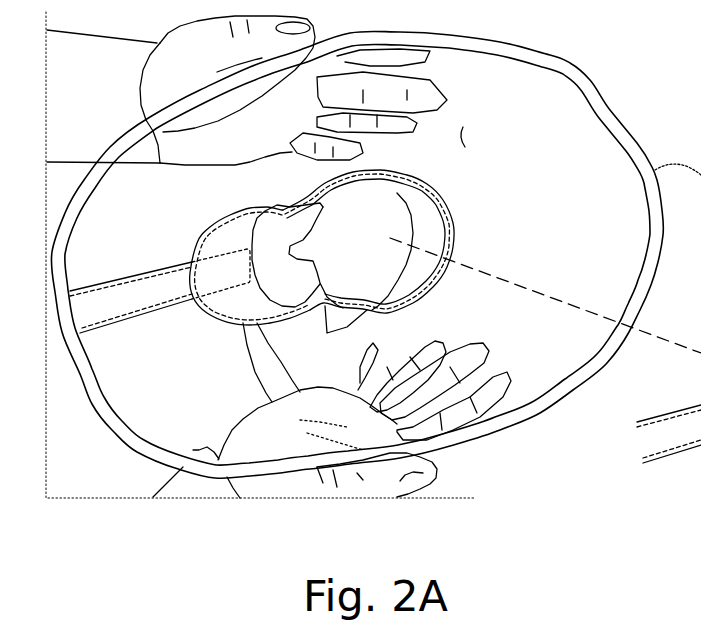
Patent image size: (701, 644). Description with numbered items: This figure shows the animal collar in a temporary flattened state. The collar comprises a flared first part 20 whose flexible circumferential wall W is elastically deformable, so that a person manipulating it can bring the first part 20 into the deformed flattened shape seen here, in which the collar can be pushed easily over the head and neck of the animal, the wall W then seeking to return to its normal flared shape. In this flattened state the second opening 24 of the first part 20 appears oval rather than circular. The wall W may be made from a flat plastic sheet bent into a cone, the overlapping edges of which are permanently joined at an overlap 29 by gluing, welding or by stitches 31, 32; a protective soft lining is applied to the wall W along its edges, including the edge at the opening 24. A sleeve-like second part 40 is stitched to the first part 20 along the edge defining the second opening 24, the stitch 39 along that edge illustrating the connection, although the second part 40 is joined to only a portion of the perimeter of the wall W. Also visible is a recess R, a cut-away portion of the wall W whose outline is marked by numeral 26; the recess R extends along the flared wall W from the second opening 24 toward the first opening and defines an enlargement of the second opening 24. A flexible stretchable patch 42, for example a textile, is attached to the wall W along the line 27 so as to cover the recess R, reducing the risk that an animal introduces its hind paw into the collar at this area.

The circumferential wall W is at (558, 130).
The first part 20 is at (579, 214).
The second opening 24 is at (417, 180).
The outline of the recess 26 is at (247, 235).
The attachment line 27 is at (213, 322).
The overlap 29 is at (95, 310).
The stitches 31 is at (122, 278).
The stitches 32 is at (107, 333).
The stitch 39 is at (496, 272).
The second part 40 is at (420, 232).
The patch 42 is at (320, 287).
The recess R is at (284, 286).